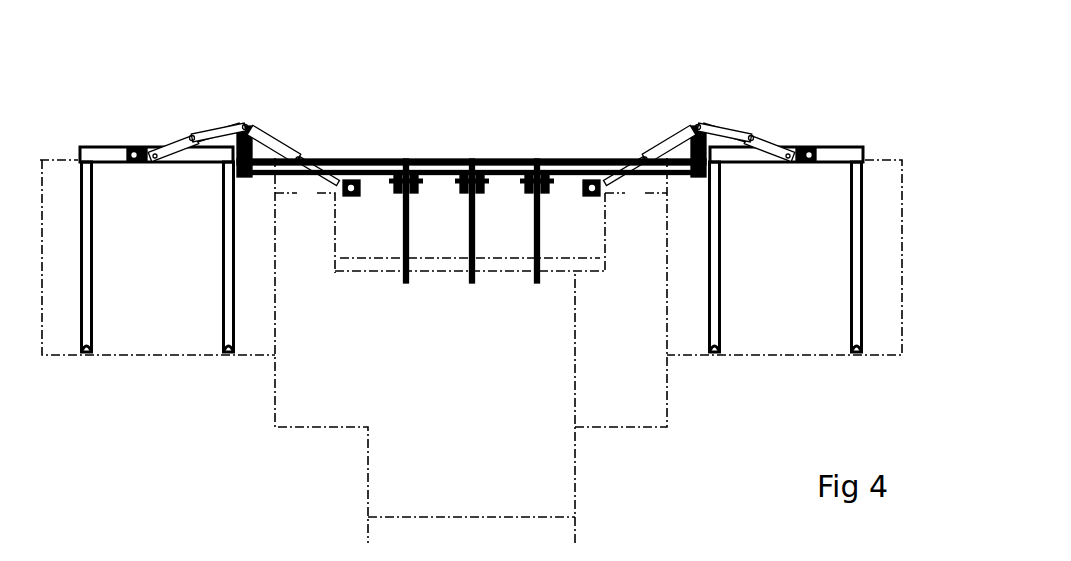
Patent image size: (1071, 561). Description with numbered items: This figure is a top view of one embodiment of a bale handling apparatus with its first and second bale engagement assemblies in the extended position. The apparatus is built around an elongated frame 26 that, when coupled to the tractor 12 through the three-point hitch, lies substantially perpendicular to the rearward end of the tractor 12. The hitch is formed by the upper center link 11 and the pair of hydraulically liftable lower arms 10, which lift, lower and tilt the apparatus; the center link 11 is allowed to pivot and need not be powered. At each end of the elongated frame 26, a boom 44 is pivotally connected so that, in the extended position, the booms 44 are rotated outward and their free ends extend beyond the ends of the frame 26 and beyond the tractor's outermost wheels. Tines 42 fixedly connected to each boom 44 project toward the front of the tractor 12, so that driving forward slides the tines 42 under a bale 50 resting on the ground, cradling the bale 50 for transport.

The lower links/arms 10 is at (403, 207).
The upper center link 11 is at (475, 208).
The tractor 12 is at (632, 427).
The elongated frame 26 is at (467, 158).
The tines 42 is at (222, 305).
The boom 44 is at (110, 147).
The bale 50 is at (878, 158).